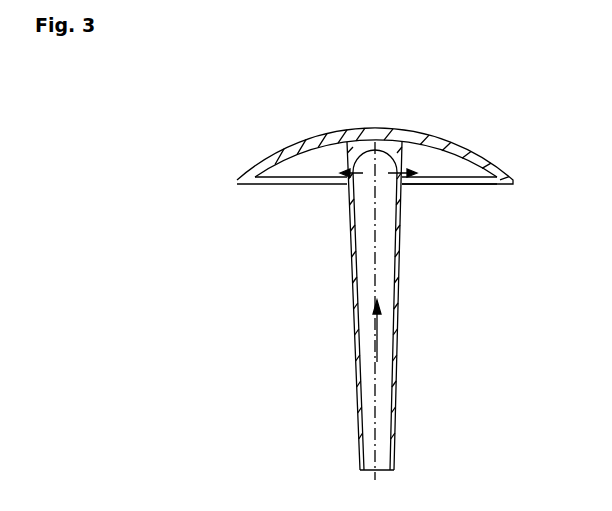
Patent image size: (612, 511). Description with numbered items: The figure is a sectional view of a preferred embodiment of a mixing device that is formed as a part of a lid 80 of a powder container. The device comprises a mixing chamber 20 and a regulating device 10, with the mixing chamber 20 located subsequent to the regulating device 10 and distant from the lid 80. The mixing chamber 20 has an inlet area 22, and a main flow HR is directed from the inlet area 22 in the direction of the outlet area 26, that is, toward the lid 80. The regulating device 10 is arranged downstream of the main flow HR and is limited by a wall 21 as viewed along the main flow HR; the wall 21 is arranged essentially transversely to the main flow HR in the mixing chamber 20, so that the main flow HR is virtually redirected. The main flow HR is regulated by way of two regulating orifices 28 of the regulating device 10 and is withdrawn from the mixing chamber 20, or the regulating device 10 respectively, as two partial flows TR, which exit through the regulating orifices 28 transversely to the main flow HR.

The regulating device 10 is at (413, 153).
The mixing chamber 20 is at (331, 327).
The wall 21 is at (366, 148).
The inlet area 22 is at (411, 460).
The outlet area 26 is at (418, 193).
The regulating orifices 28 is at (342, 175).
The lid 80 is at (285, 148).
The partial flows TR is at (398, 182).
The main flow HR is at (377, 330).